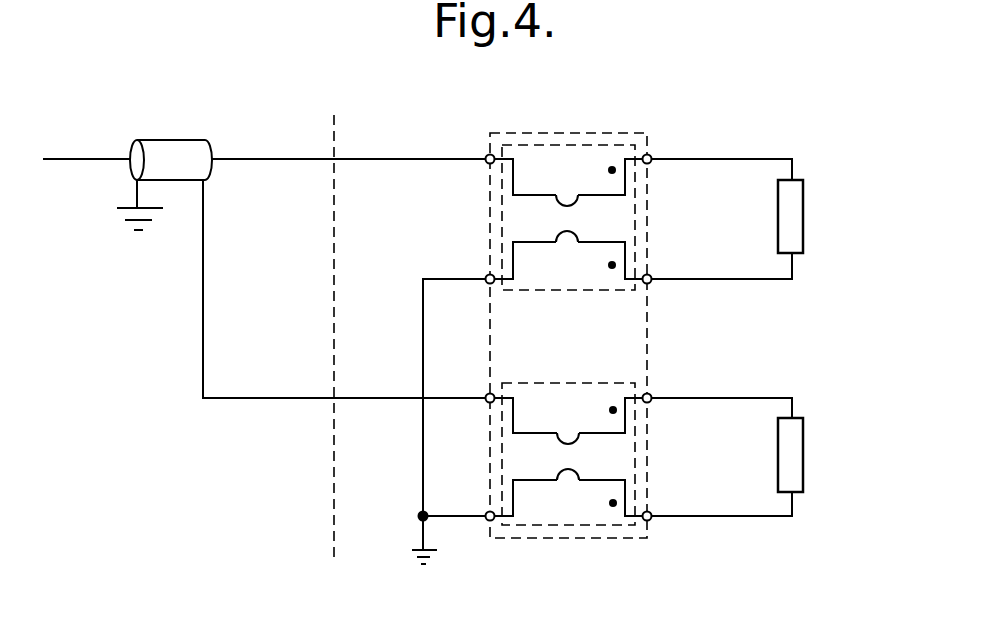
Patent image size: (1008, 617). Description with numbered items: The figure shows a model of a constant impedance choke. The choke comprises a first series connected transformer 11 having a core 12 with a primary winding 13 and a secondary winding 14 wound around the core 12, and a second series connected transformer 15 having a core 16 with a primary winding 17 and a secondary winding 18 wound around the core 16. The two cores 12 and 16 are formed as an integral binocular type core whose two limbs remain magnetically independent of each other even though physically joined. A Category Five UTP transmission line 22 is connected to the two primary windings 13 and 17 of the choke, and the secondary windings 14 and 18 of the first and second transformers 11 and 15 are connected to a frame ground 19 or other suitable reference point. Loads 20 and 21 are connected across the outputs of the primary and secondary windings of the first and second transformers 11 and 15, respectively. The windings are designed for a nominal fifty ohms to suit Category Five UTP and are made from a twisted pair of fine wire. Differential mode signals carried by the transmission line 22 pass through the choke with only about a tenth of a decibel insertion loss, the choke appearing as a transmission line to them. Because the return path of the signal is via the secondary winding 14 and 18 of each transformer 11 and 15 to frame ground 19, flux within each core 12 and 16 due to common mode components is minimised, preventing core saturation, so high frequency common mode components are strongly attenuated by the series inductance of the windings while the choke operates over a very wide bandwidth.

The first series connected transformer 11 is at (606, 290).
The core 12 is at (623, 222).
The primary winding 13 is at (612, 186).
The secondary winding 14 is at (577, 243).
The second series connected transformer 15 is at (623, 452).
The core 16 is at (622, 458).
The primary winding 17 is at (546, 412).
The secondary winding 18 is at (557, 512).
The frame ground 19 is at (430, 555).
The load 20 is at (797, 222).
The load 21 is at (797, 463).
The Category 5 UTP transmission line 22 is at (193, 142).